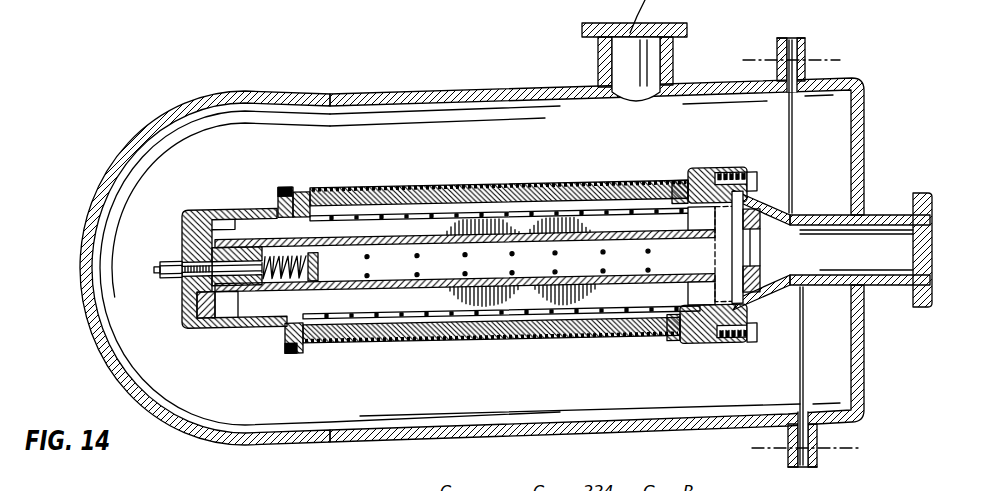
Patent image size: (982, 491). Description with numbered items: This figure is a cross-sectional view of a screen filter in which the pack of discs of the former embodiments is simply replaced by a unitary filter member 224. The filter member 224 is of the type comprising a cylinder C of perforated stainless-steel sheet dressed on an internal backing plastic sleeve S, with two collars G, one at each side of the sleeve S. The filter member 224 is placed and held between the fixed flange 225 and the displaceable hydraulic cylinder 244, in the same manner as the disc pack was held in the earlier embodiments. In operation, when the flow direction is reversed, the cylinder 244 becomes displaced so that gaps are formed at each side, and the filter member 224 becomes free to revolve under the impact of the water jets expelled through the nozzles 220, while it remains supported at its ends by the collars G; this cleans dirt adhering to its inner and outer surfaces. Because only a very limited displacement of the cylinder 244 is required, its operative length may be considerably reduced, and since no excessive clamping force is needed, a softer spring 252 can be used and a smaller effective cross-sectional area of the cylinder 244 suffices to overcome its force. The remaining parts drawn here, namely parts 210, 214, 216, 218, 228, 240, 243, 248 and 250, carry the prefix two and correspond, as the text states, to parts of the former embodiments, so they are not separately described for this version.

The outer shell / vessel 210 is at (465, 90).
The outlet pipe 214 is at (917, 258).
The inner perforated tube 216 is at (662, 240).
The lower screen 218 is at (645, 305).
The nozzles 220 is at (487, 217).
The unitary filter member 224 is at (597, 183).
The fixed flange 225 is at (717, 168).
The valve disc 228 is at (757, 313).
The plug 240 is at (216, 320).
The guide block 243 is at (242, 305).
The displaceable hydraulic cylinder 244 is at (248, 212).
The collar 248 is at (278, 188).
The adjusting bolt 250 is at (160, 272).
The spring 252 is at (288, 277).
The collars G is at (297, 188).
The plastic sleeve S is at (428, 183).
The cylinder of perforated stainless-steel sheet C is at (537, 185).